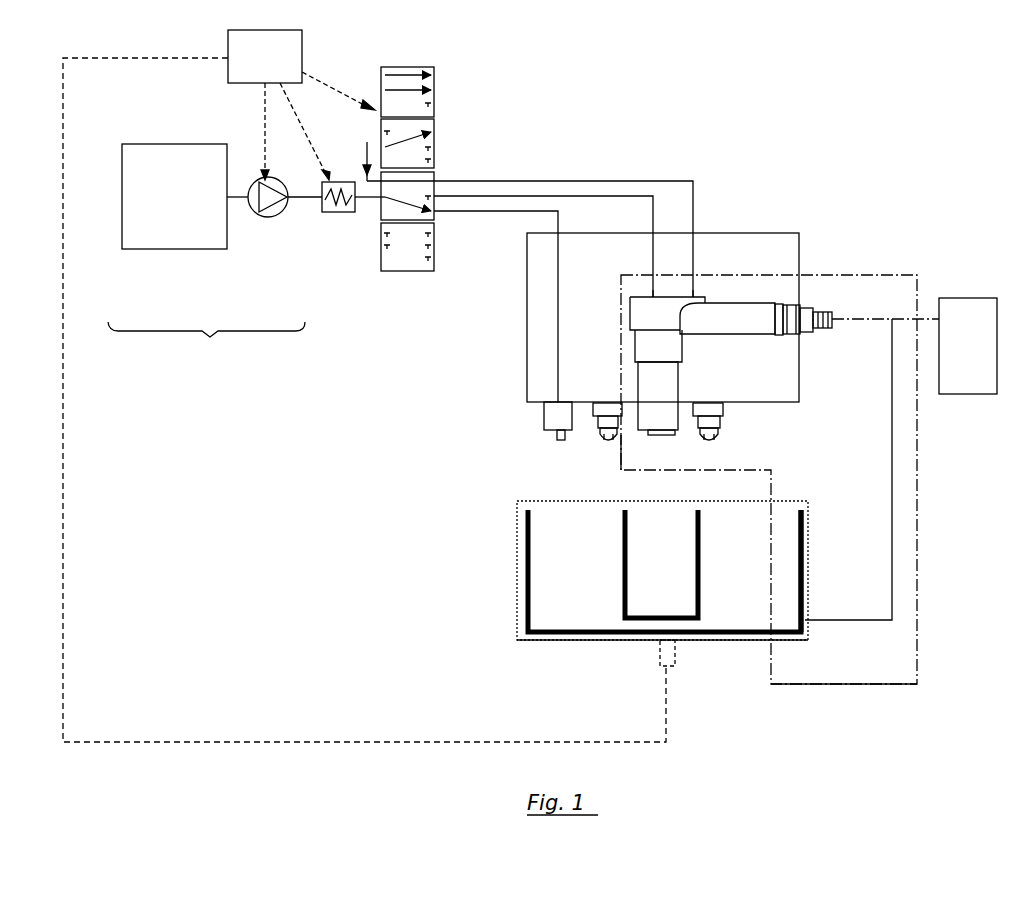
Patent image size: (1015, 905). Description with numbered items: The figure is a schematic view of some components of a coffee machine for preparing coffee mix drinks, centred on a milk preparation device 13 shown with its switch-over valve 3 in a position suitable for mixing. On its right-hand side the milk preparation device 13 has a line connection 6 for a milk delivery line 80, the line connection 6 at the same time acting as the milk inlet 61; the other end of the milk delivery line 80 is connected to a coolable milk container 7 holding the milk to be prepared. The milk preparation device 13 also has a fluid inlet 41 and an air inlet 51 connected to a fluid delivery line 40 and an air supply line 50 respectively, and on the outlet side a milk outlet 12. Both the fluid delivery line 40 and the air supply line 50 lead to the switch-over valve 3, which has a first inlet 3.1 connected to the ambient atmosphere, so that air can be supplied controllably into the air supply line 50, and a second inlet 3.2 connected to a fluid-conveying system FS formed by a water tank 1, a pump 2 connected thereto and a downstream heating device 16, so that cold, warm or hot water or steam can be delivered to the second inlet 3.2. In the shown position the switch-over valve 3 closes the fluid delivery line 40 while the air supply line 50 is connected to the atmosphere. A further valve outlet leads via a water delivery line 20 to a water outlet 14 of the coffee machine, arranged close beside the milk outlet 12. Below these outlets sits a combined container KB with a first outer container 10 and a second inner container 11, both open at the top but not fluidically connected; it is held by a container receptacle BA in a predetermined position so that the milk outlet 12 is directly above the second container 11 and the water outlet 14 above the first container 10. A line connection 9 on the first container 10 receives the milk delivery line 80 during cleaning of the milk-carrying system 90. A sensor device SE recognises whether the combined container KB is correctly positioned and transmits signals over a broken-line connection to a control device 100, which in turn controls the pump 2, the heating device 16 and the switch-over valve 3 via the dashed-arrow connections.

The control device 100 is at (285, 69).
The water tank 1 is at (179, 230).
The pump 2 is at (274, 215).
The heating device 16 is at (337, 205).
The switch-over valve 3 is at (412, 258).
The first inlet 3.1 is at (349, 156).
The second inlet 3.2 is at (378, 202).
The water delivery line 20 is at (507, 212).
The fluid delivery line 40 is at (558, 195).
The air supply line 50 is at (612, 180).
The fluid inlet 41 is at (655, 295).
The air inlet 51 is at (693, 295).
The milk preparation device 13 is at (747, 313).
The line connection 6 is at (857, 282).
The milk inlet 61 is at (833, 320).
The milk container 7 is at (951, 378).
The milk delivery line 80 is at (891, 469).
The water outlet 14 is at (555, 430).
The milk outlet 12 is at (647, 432).
The first outer container 10 is at (570, 620).
The second inner container 11 is at (673, 607).
The line connection 9 is at (798, 619).
The milk-carrying system 90 is at (802, 683).
The fluid-conveying system FS is at (206, 342).
The combined container KB is at (786, 502).
The sensor device SE is at (663, 658).
The container receptacle BA is at (740, 638).